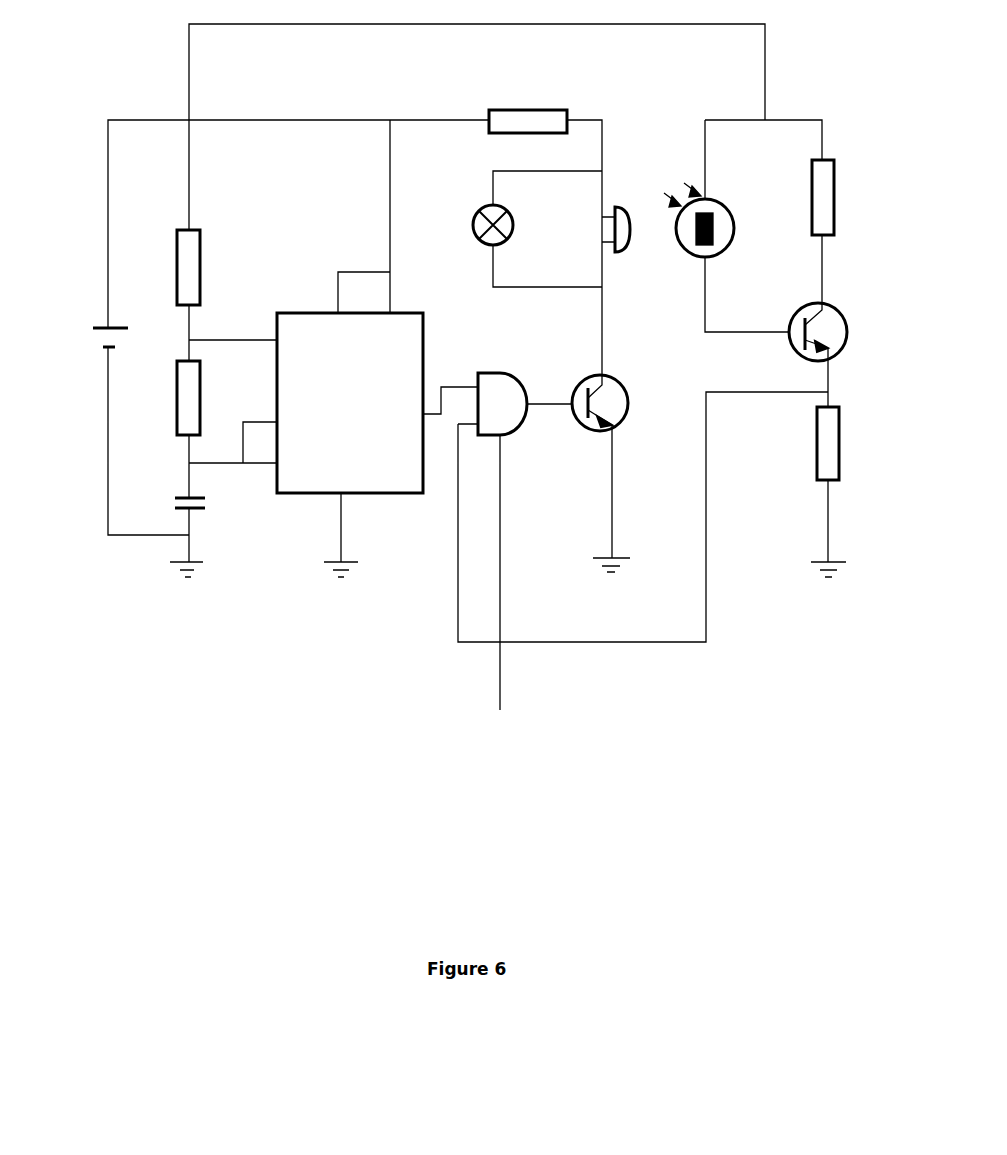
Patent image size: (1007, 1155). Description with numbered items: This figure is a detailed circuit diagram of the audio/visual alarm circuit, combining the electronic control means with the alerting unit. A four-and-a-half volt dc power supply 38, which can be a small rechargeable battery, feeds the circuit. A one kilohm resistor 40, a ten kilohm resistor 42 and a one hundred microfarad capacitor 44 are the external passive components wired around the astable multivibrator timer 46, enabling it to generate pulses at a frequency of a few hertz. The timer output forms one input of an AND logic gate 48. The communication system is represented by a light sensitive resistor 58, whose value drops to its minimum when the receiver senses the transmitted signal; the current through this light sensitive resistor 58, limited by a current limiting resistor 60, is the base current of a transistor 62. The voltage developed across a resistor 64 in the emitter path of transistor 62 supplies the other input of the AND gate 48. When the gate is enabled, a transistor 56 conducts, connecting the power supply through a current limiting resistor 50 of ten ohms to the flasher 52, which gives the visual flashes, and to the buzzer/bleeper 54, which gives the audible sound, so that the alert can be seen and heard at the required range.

The power supply 38 is at (105, 323).
The 1 kilo-ohm resistor 40 is at (176, 265).
The 10 kilo-ohm resistor 42 is at (174, 407).
The 100 microfarad capacitor 44 is at (180, 513).
The 555 timer 46 is at (400, 505).
The AND gate 48 is at (502, 560).
The 10 ohm resistor 50 is at (488, 118).
The flasher 52 is at (476, 215).
The buzzer/bleeper 54 is at (626, 253).
The transistor 56 is at (584, 430).
The photodiode 58 is at (686, 205).
The 10 kilo-ohm resistor 60 is at (815, 160).
The transistor 62 is at (795, 347).
The 10 kilo-ohm resistor 64 is at (822, 483).